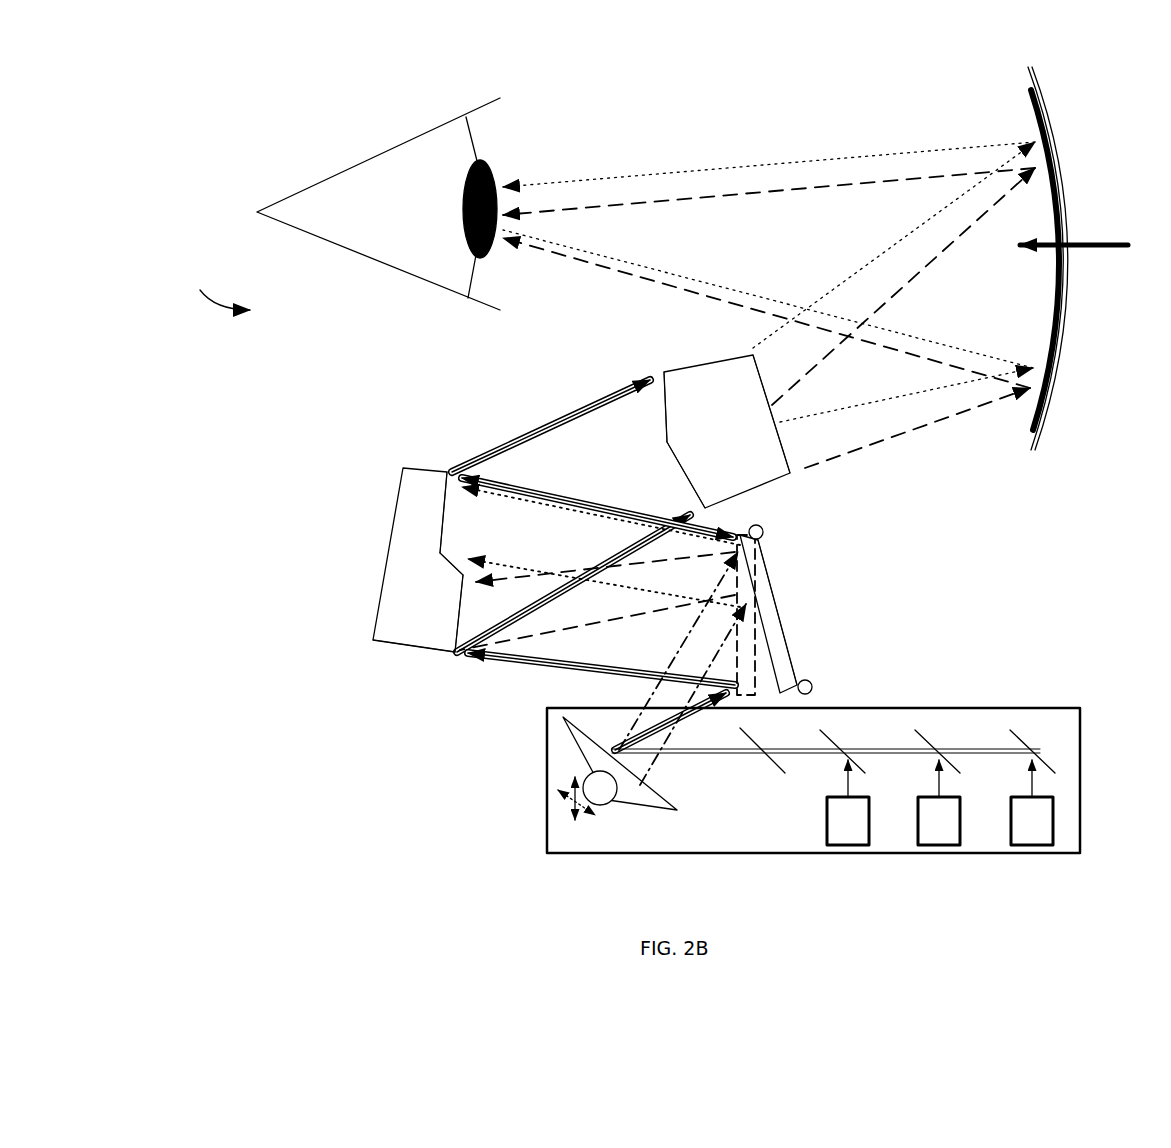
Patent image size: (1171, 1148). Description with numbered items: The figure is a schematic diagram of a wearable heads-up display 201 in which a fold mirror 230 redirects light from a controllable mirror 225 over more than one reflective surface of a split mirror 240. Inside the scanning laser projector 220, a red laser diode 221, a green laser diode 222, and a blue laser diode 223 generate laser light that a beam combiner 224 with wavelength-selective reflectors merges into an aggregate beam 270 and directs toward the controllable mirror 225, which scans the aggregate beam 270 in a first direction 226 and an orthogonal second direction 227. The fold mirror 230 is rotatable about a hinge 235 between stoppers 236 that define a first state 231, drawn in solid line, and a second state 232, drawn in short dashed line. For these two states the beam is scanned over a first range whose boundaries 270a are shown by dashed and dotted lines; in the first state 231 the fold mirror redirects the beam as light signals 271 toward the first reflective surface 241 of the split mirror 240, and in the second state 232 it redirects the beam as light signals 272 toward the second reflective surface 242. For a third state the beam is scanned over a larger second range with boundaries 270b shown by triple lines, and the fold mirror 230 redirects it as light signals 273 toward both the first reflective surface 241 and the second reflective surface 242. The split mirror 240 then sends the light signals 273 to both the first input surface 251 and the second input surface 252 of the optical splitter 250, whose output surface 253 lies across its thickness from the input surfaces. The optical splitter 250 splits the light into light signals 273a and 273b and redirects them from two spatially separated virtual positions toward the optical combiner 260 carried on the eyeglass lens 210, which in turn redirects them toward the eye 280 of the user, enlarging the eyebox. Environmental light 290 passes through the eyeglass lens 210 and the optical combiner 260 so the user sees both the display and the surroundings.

The wearable heads-up display 201 is at (215, 285).
The eyeglass lens 210 is at (1030, 78).
The scanning laser projector 220 is at (1048, 707).
The red laser diode 221 is at (1032, 845).
The green laser diode 222 is at (939, 845).
The blue laser diode 223 is at (848, 845).
The beam combiner 224 is at (1052, 747).
The controllable mirror 225 is at (585, 745).
The first direction 226 is at (607, 803).
The second direction 227 is at (576, 812).
The fold mirror 230 is at (790, 648).
The first state 231 is at (800, 660).
The second state 232 is at (765, 577).
The hinge 235 is at (763, 532).
The stoppers 236 is at (813, 687).
The split mirror 240 is at (425, 618).
The first reflective surface 241 is at (452, 623).
The second reflective surface 242 is at (442, 527).
The optical splitter 250 is at (750, 482).
The first input surface 251 is at (686, 473).
The second input surface 252 is at (663, 410).
The output surface 253 is at (762, 390).
The optical combiner 260 is at (1030, 122).
The aggregate beam 270 is at (688, 755).
The boundaries of first scan range 270a is at (653, 700).
The boundaries of second scan range 270b is at (682, 622).
The light signals 271 is at (458, 593).
The light signals 272 is at (462, 560).
The light signals 273 is at (597, 503).
The light signals 273a is at (982, 408).
The light signals 273b is at (901, 400).
The eye 280 is at (343, 168).
The environmental light 290 is at (1108, 243).